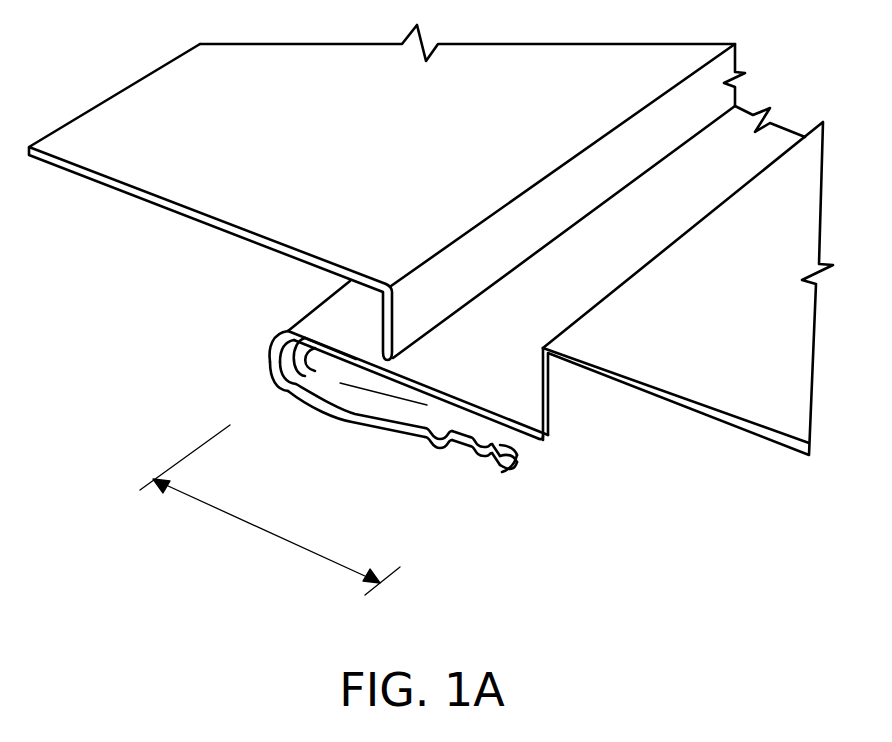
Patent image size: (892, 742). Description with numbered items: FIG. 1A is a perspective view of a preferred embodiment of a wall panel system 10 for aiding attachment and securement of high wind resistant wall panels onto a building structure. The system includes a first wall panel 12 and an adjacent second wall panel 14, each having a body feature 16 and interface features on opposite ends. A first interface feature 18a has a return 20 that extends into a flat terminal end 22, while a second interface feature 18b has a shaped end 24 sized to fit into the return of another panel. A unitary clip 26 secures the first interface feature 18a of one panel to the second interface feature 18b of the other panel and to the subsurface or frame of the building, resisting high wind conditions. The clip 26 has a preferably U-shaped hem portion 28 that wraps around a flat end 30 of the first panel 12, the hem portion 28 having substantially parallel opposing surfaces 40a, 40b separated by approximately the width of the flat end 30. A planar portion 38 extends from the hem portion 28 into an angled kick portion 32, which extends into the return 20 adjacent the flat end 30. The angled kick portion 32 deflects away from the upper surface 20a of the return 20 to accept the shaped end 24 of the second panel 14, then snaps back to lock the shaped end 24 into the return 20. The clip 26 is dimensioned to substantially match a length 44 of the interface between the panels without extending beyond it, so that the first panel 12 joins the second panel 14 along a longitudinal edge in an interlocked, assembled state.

The wall panel system 10 is at (92, 411).
The first wall panel 12 is at (128, 194).
The second wall panel 14 is at (716, 422).
The body feature 16 is at (336, 137).
The first interface feature 18a is at (303, 400).
The second interface feature 18b is at (283, 337).
The return 20 is at (353, 318).
The upper surface of the return 20a is at (332, 358).
The flat terminal end 22 is at (492, 460).
The shaped end 24 is at (289, 357).
The unitary clip 26 is at (477, 478).
The hem portion 28 is at (456, 470).
The flat end 30 is at (420, 441).
The angled kick portion 32 is at (345, 413).
The planar portion 38 is at (427, 405).
The opposing surface 40a is at (518, 465).
The opposing surface 40b is at (530, 462).
The length 44 is at (260, 532).